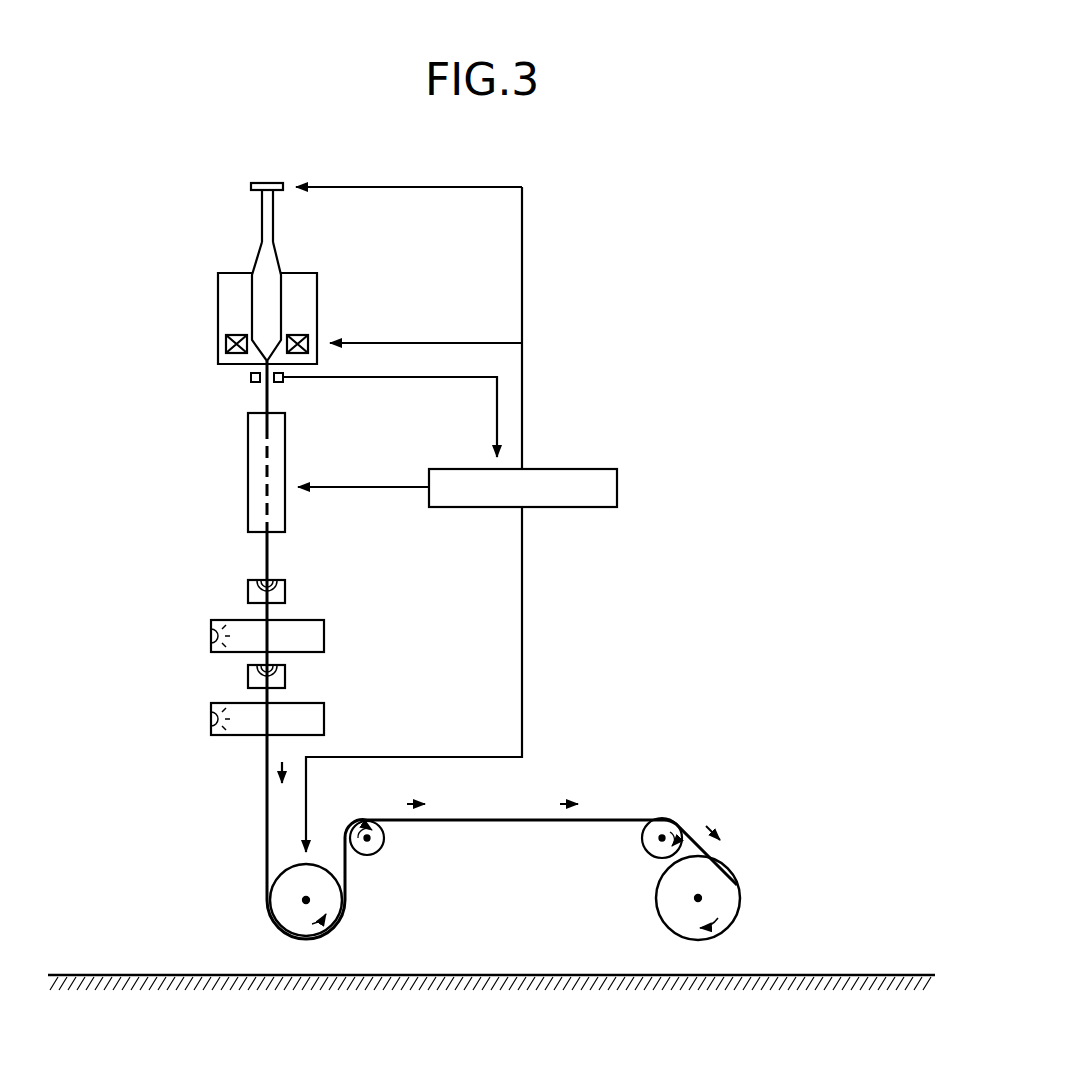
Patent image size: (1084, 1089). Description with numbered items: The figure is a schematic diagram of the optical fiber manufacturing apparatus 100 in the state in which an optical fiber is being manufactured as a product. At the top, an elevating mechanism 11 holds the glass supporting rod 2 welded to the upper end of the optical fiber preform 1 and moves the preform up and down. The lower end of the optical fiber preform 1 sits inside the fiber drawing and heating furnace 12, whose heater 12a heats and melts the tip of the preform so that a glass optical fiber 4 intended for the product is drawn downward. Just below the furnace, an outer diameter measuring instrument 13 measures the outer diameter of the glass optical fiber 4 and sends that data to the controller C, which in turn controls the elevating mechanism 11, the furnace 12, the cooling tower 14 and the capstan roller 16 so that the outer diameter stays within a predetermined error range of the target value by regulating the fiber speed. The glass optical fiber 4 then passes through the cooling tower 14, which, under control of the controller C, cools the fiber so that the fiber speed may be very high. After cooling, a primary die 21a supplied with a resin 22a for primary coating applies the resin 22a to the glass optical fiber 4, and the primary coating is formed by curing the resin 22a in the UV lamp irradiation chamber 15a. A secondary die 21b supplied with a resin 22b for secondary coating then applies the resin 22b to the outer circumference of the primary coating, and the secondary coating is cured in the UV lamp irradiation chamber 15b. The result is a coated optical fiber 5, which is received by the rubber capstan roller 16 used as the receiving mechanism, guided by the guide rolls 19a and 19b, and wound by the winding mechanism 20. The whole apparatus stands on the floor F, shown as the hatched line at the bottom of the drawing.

The optical fiber manufacturing apparatus 100 is at (600, 244).
The controller C is at (555, 452).
The elevating mechanism 11 is at (251, 186).
The supporting rod 2 is at (262, 216).
The optical fiber preform 1 is at (293, 290).
The fiber drawing and heating furnace 12 is at (328, 301).
The heater 12a is at (226, 344).
The outer diameter measuring instrument 13 is at (250, 392).
The glass optical fiber 4 is at (270, 397).
The cooling tower 14 is at (285, 449).
The optical fiber 5 is at (267, 852).
The primary die 21a is at (250, 584).
The resin for primary coating 22a is at (273, 580).
The UV lamp irradiation chamber 15a is at (207, 610).
The secondary die 21b is at (250, 676).
The resin for secondary coating 22b is at (273, 665).
The UV lamp irradiation chamber 15b is at (212, 747).
The capstan roller 16 is at (323, 865).
The guide roll 19a is at (382, 853).
The guide roll 19b is at (644, 851).
The winding mechanism 20 is at (663, 929).
The floor F is at (78, 975).